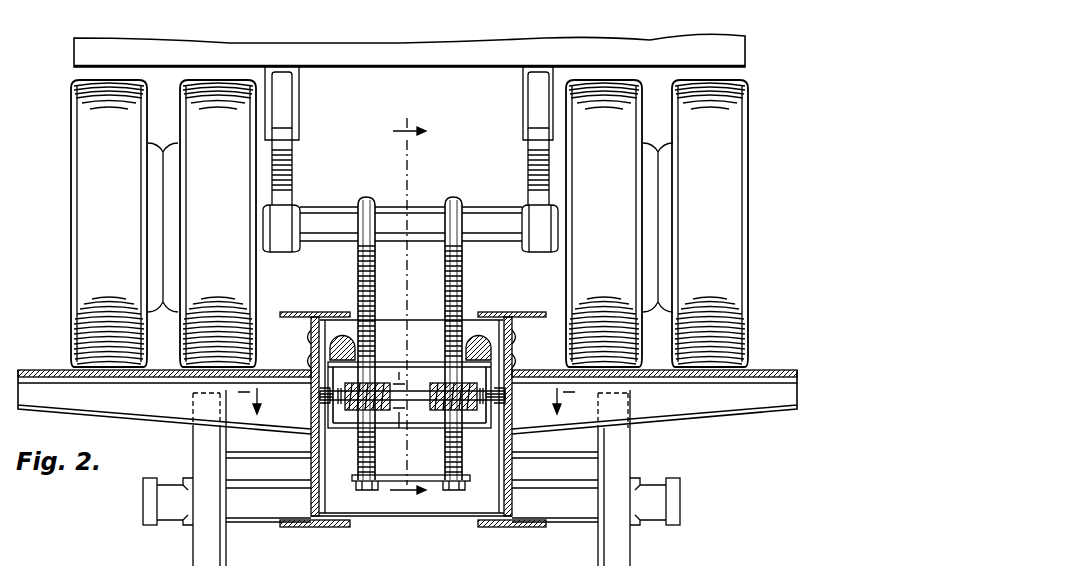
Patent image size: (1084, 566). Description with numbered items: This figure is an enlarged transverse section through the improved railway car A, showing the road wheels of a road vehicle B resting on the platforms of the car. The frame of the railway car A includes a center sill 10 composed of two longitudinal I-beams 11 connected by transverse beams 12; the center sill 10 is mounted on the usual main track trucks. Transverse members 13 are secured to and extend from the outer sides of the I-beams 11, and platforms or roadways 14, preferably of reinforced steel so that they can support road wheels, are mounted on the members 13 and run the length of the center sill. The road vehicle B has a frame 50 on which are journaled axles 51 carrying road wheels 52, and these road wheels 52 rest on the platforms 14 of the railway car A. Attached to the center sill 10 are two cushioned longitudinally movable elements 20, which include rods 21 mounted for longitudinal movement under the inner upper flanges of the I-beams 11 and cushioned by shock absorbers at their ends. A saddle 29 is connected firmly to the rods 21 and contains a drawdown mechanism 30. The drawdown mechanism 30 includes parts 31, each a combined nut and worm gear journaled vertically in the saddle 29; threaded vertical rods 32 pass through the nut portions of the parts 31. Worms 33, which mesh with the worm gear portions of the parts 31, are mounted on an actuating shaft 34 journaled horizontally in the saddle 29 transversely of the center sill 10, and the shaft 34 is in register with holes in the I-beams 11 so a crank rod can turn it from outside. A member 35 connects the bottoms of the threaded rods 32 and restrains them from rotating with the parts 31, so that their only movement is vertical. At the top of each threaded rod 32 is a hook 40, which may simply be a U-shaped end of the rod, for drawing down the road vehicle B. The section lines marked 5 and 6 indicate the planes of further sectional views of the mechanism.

The railway car A is at (752, 398).
The road vehicle B is at (735, 56).
The section line 5 is at (407, 401).
The section line 6 is at (408, 304).
The center sill 10 is at (311, 494).
The longitudinal I-beam 11 is at (526, 348).
The transverse beam 12 is at (373, 505).
The transverse member 13 is at (168, 404).
The platform 14 is at (53, 371).
The cushioned longitudinally movable element 20 is at (320, 334).
The rod 21 is at (341, 336).
The saddle 29 is at (415, 355).
The drawdown mechanism 30 is at (336, 417).
The combined nut and worm gear 31 is at (404, 420).
The threaded vertical rod 32 is at (445, 268).
The worm 33 is at (357, 415).
The actuating shaft 34 is at (414, 388).
The restraining member 35 is at (423, 476).
The hook 40 is at (365, 196).
The frame 50 is at (299, 107).
The axle 51 is at (408, 214).
The road wheel 52 is at (78, 250).